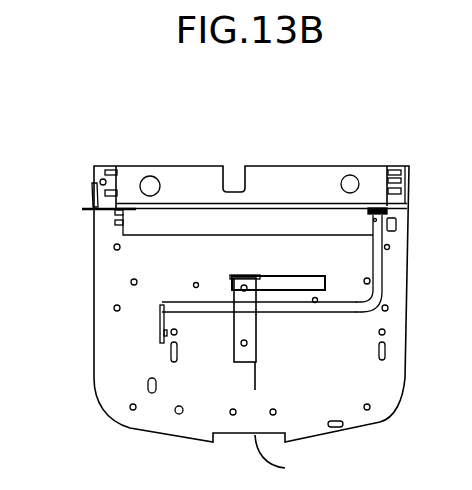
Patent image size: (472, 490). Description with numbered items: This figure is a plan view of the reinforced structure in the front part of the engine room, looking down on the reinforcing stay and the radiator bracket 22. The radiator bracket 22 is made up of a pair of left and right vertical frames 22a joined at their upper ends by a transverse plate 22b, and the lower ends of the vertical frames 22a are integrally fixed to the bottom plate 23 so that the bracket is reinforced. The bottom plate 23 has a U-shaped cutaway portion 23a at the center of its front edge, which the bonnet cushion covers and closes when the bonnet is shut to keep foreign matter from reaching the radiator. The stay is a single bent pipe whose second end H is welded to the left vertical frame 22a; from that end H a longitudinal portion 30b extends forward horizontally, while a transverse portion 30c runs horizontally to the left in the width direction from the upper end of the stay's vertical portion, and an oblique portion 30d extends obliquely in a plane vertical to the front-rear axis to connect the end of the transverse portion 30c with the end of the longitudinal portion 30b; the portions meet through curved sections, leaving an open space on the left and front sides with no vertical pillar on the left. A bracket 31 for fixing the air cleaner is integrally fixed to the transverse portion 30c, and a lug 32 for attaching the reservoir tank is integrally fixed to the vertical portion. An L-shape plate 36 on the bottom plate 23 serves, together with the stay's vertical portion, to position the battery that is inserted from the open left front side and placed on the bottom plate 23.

The radiator bracket 22 is at (278, 158).
The vertical frame 22a is at (113, 210).
The transverse plate 22b is at (203, 212).
The second end H is at (374, 218).
The bottom plate 23 is at (387, 403).
The cutaway portion 23a is at (285, 468).
The longitudinal portion 30b is at (382, 282).
The transverse portion 30c is at (270, 312).
The oblique portion 30d is at (340, 315).
The bracket 31 is at (236, 335).
The lug 32 is at (158, 317).
The L-shape plate 36 is at (283, 283).